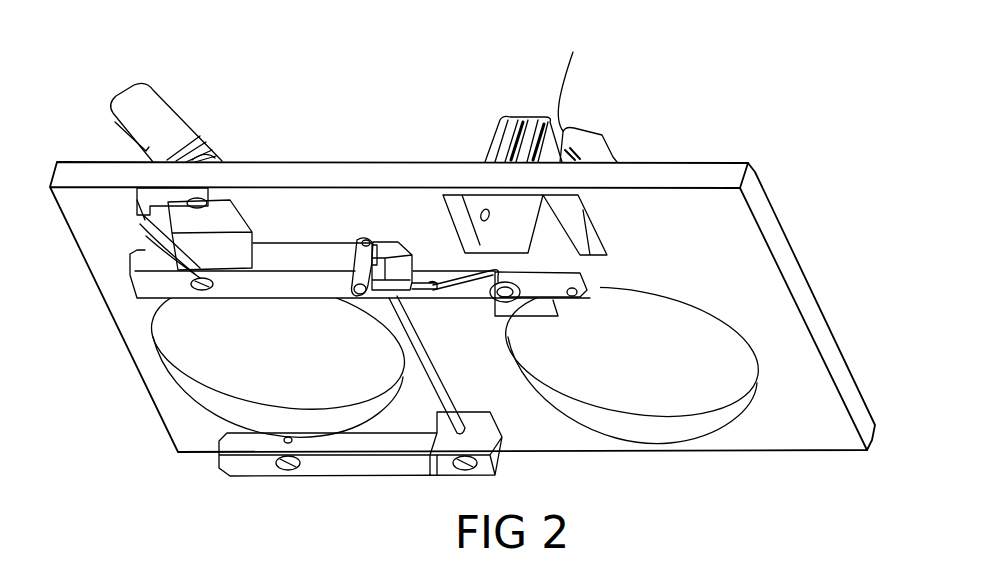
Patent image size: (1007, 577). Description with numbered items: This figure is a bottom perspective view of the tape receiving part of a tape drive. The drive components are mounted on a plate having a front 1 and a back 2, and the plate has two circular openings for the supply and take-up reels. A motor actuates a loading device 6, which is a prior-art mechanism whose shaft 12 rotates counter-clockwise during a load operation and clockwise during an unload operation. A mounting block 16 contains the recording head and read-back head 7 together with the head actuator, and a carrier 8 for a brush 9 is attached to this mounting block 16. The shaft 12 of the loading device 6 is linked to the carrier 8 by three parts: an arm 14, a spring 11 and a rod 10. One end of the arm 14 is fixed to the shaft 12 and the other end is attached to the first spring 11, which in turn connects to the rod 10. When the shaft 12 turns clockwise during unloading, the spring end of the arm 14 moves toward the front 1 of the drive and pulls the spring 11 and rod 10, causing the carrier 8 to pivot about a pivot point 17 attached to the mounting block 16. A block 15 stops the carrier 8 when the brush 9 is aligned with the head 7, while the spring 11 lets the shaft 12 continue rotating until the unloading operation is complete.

The front 1 is at (133, 362).
The back 2 is at (807, 280).
The loading device 6 is at (297, 255).
The recording head and read-back head 7 is at (520, 113).
The carrier 8 is at (582, 148).
The brush 9 is at (567, 79).
The rod 10 is at (463, 288).
The spring 11 is at (408, 282).
The shaft 12 is at (445, 388).
The arm 14 is at (363, 241).
The block 15 is at (480, 233).
The mounting block 16 is at (538, 225).
The pivot point 17 is at (522, 295).